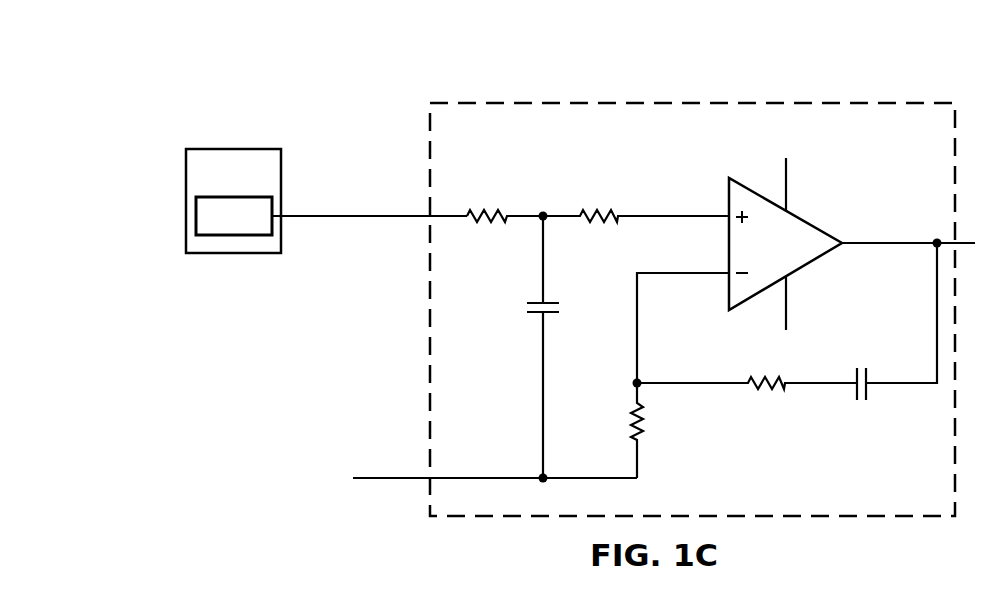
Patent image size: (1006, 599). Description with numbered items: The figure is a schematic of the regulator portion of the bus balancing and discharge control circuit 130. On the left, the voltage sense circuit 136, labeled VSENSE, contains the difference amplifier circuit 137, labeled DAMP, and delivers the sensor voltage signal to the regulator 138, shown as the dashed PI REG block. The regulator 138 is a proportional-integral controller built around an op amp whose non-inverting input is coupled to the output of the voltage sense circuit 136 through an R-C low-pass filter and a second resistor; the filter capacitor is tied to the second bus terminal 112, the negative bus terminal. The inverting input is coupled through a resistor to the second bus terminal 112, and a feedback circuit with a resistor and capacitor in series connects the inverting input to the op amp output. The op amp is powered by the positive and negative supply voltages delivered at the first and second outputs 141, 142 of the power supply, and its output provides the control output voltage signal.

The bus balancing and discharge control circuit 130 is at (236, 56).
The voltage sense circuit 136 is at (232, 149).
The difference amplifier circuit 137 is at (196, 200).
The regulator 138 is at (690, 103).
The first output 141 is at (786, 175).
The second output 142 is at (786, 322).
The second bus terminal 112 is at (383, 477).